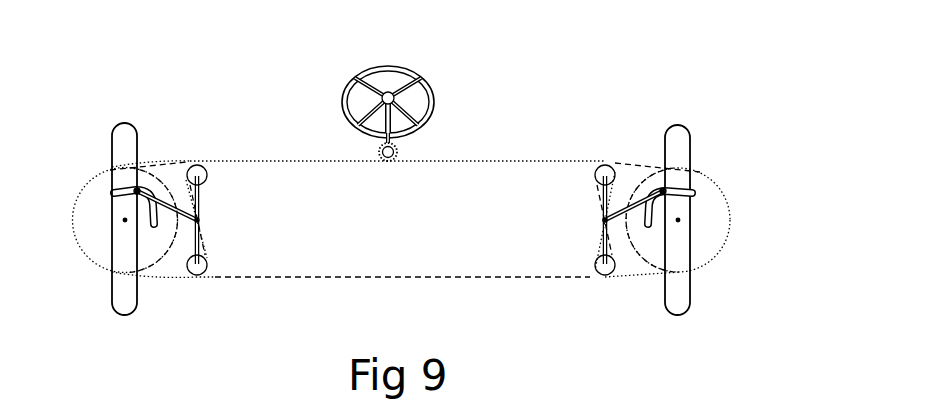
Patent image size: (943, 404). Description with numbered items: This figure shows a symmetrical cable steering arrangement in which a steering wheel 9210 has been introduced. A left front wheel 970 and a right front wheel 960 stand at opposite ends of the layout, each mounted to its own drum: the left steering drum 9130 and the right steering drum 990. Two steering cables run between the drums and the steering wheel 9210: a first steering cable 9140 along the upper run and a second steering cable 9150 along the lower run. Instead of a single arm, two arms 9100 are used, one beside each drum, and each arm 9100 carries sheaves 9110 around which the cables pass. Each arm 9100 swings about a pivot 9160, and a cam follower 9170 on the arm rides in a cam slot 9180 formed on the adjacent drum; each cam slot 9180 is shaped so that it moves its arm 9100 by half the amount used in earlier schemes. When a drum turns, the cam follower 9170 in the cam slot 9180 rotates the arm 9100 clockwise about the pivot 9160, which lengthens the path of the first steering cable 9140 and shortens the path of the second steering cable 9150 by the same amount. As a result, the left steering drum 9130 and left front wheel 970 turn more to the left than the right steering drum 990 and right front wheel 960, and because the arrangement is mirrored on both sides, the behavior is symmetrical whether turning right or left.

The left steering drum 9130 is at (87, 217).
The left front wheel 970 is at (127, 153).
The steering wheel 9210 is at (380, 67).
The first steering cable 9140 is at (268, 162).
The second steering cable 9150 is at (255, 277).
The right front wheel 960 is at (725, 75).
The right steering drum 990 is at (703, 188).
The cam slot 9180 is at (686, 197).
The arm 9100 is at (605, 220).
The cam follower 9170 is at (663, 188).
The sheaves 9110 is at (598, 180).
The pivot 9160 is at (597, 180).